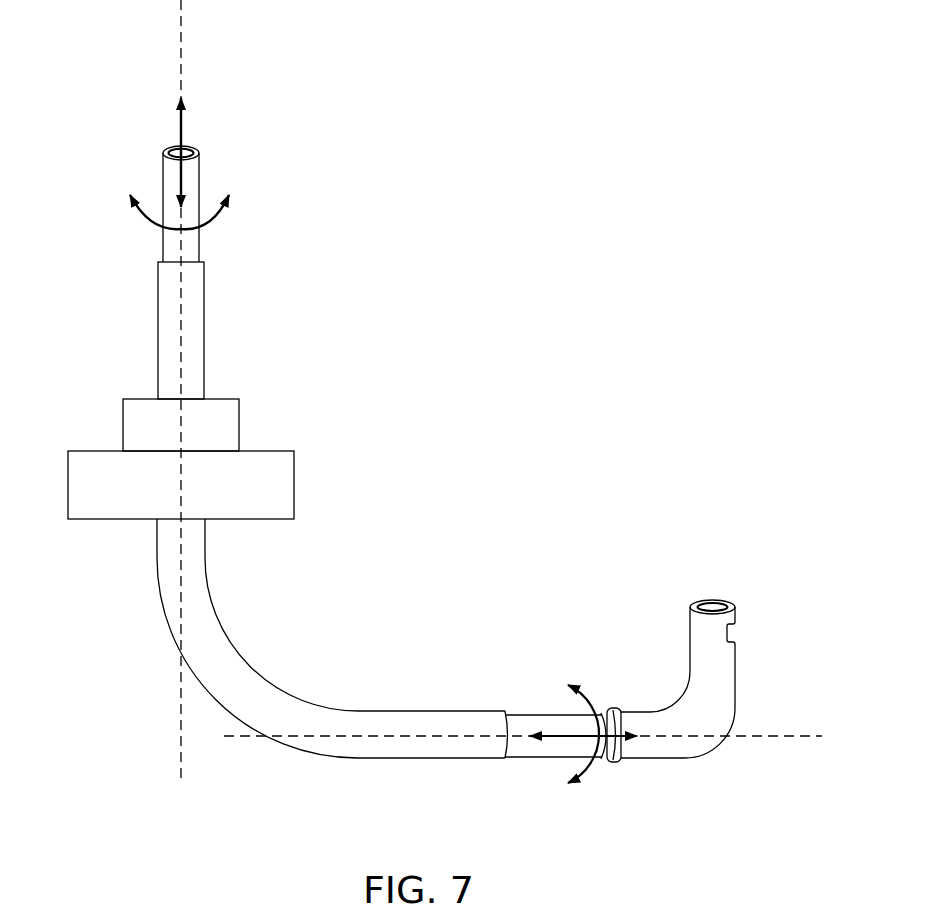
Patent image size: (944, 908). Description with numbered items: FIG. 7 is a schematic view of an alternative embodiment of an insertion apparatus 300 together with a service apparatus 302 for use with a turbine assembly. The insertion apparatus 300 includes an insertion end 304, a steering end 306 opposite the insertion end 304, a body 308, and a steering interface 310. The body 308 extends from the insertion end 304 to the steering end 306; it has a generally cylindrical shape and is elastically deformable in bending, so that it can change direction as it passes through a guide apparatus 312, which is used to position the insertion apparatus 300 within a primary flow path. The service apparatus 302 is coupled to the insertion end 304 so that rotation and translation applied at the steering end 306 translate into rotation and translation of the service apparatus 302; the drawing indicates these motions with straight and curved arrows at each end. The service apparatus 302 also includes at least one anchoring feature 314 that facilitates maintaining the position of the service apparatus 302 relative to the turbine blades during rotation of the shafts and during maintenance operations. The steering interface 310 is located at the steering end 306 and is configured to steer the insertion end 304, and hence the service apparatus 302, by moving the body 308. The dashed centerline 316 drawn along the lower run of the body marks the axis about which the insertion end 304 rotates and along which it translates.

The insertion apparatus 300 is at (155, 73).
The service apparatus 302 is at (724, 592).
The insertion end 304 is at (547, 712).
The steering end 306 is at (162, 152).
The body 308 is at (533, 760).
The steering interface 310 is at (206, 179).
The guide apparatus 312 is at (255, 692).
The anchoring feature 314 is at (739, 630).
The horizontal axis 316 is at (784, 740).